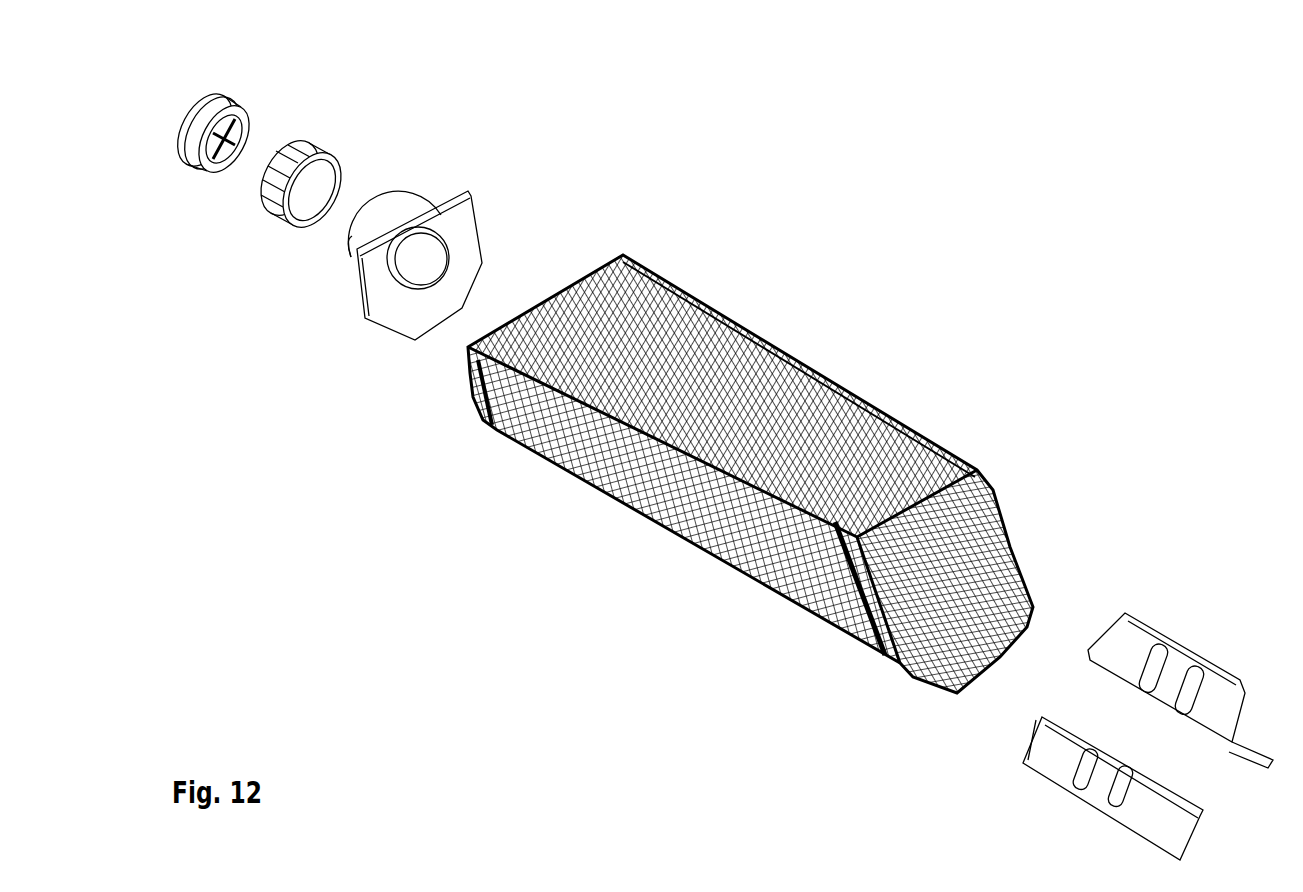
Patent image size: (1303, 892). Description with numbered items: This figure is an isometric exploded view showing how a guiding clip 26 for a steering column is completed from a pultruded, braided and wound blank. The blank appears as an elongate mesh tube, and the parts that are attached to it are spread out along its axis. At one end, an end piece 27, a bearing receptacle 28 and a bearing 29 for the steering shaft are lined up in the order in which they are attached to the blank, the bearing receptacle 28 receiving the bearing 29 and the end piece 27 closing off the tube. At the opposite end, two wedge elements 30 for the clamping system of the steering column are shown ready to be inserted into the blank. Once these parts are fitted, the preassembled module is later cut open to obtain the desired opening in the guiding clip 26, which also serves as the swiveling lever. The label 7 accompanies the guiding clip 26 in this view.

The bearing 29 is at (232, 102).
The bearing receptacle 28 is at (293, 145).
The end piece 27 is at (403, 207).
The guiding clip 26 is at (750, 474).
The sieve 7 is at (793, 358).
The wedge elements 30 is at (1133, 647).